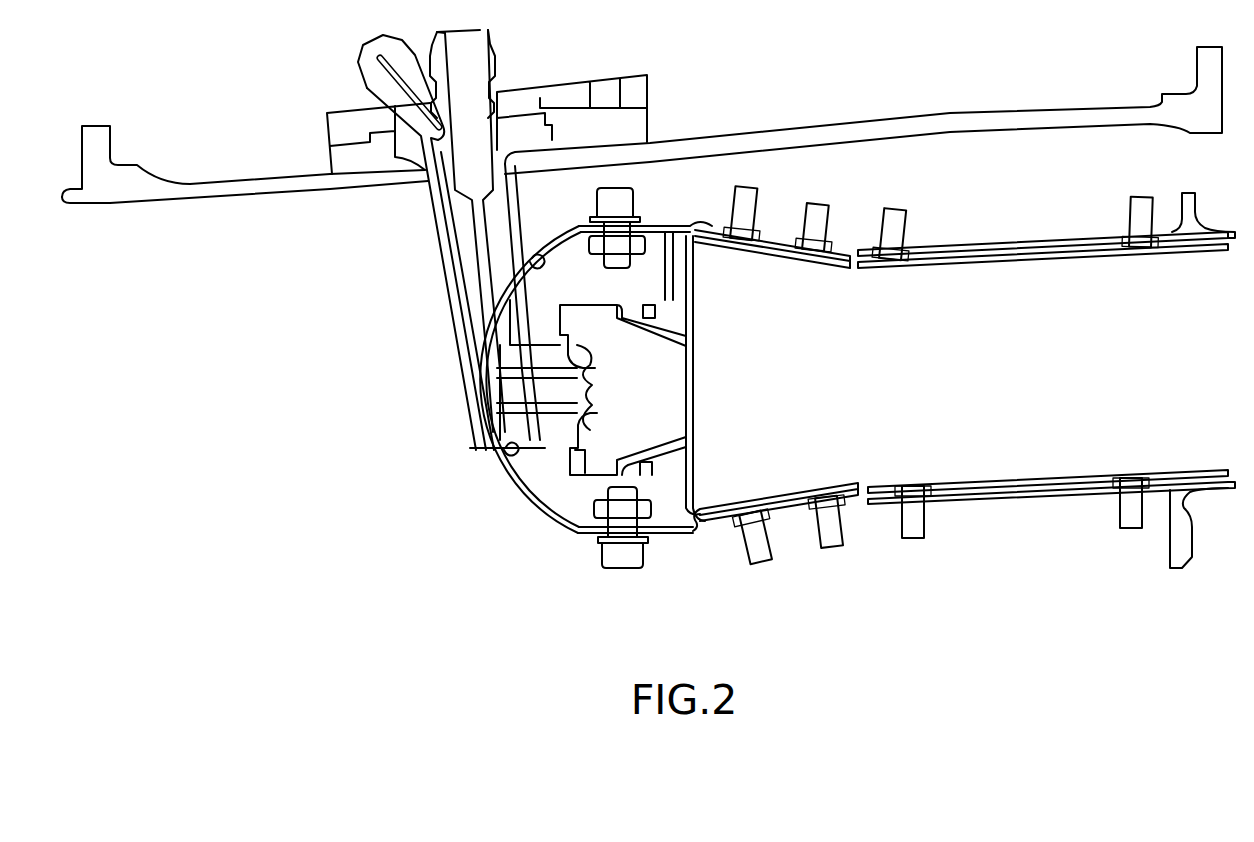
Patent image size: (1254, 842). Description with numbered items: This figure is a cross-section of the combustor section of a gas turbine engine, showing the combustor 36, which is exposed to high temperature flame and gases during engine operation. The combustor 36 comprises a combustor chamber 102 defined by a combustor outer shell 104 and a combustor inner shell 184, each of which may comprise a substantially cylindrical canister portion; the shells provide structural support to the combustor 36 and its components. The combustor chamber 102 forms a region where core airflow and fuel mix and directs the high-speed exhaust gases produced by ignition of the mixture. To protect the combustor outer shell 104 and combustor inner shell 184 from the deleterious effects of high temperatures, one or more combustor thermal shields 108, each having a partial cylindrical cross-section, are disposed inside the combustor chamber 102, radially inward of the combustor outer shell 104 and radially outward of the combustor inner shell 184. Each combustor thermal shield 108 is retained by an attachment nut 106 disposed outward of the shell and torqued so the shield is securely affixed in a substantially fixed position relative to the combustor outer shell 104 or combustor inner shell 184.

The combustor 36 is at (1080, 138).
The combustor chamber 102 is at (1088, 352).
The combustor outer shell 104 is at (1042, 236).
The attachment nut 106 is at (760, 212).
The combustor thermal shield 108 is at (775, 257).
The combustor inner shell 184 is at (1018, 502).